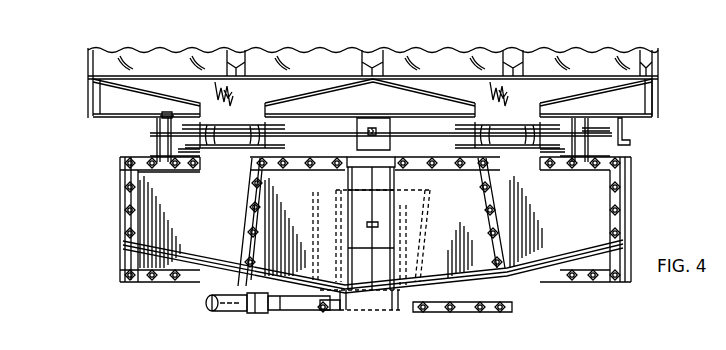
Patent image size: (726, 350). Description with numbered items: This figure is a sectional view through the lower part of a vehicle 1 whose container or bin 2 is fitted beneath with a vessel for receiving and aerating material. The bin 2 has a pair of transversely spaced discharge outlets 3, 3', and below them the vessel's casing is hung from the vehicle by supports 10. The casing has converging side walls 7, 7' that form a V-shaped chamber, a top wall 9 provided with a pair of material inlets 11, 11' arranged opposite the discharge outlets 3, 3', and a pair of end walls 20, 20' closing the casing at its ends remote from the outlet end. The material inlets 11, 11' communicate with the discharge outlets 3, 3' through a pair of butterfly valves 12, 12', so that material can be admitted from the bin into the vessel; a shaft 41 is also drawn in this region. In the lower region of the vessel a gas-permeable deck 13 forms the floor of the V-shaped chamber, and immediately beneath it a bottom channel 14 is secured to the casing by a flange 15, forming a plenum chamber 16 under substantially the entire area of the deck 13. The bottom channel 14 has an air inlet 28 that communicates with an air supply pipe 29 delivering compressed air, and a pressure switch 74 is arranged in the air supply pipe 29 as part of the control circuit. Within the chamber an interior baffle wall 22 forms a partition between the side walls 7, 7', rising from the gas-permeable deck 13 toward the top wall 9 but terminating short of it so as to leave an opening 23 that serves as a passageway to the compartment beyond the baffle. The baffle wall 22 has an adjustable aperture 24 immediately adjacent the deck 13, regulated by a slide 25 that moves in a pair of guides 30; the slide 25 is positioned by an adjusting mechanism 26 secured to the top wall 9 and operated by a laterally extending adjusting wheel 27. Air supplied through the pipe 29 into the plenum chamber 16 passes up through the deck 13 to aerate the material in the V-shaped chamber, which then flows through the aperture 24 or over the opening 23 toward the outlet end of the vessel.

The vehicle 1 is at (666, 94).
The container or bin 2 is at (385, 63).
The discharge outlet 3 is at (284, 113).
The discharge outlet 3' is at (553, 113).
The drive shaft 41 is at (320, 120).
The adjusting mechanism 26 is at (392, 118).
The supports 10 is at (160, 124).
The butterfly valve 12 is at (161, 140).
The material inlet 11 is at (145, 152).
The butterfly valve 12' is at (619, 140).
The adjusting wheel 27 is at (622, 126).
The material inlet 11' is at (603, 157).
The end wall 20 is at (142, 219).
The top wall 9 is at (160, 170).
The baffle wall 22 is at (313, 205).
The guides 30 is at (336, 222).
The opening 23 is at (375, 189).
The side wall 7' is at (450, 247).
The end wall 20' is at (590, 219).
The side wall 7 is at (373, 270).
The gas-permeable deck 13 is at (348, 296).
The adjustable aperture 24 is at (362, 280).
The bottom channel 14 is at (371, 300).
The plenum chamber 16 is at (383, 298).
The slide 25 is at (383, 254).
The flange 15 is at (458, 290).
The air supply pipe 29 is at (212, 306).
The pressure switch 74 is at (258, 312).
The air inlet 28 is at (284, 310).